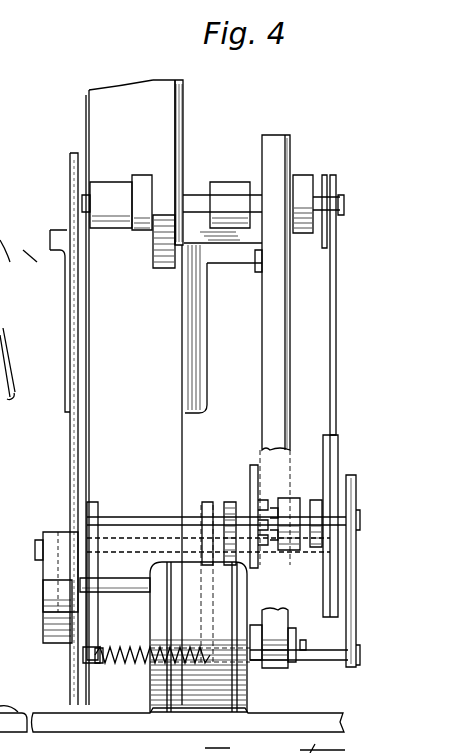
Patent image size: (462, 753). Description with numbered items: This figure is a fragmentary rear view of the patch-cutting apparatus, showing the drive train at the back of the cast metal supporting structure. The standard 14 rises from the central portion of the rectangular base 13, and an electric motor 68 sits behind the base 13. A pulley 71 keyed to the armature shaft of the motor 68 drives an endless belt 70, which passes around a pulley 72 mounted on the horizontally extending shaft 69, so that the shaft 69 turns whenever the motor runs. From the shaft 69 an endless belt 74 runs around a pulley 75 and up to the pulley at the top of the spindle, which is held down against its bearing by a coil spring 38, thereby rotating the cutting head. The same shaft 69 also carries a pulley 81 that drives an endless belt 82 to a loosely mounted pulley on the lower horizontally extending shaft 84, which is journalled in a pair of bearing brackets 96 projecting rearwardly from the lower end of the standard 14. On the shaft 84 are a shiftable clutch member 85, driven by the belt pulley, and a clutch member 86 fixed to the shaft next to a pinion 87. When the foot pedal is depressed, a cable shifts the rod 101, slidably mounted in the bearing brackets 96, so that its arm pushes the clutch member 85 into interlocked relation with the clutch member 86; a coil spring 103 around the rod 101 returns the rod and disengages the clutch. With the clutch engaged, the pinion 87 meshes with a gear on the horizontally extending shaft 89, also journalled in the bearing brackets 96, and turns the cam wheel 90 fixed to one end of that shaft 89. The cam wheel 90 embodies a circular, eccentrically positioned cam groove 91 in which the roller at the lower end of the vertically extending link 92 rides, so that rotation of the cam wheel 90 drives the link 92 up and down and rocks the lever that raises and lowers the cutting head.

The rectangular base 13 is at (140, 724).
The standard 14 is at (174, 392).
The coil spring 38 is at (332, 462).
The electric motor 68 is at (240, 690).
The horizontally extending shaft 69 is at (340, 213).
The endless belt 70 is at (278, 328).
The pulley 71 is at (290, 656).
The pulley 72 is at (296, 172).
The endless belt 74 is at (165, 112).
The pulley 75 is at (147, 246).
The pulley 81 is at (334, 180).
The endless belt 82 is at (330, 298).
The horizontally extending shaft 84 is at (150, 513).
The clutch member 85 is at (294, 500).
The clutch member 86 is at (262, 500).
The pinion 87 is at (229, 502).
The horizontally extending shaft 89 is at (115, 591).
The cam wheel 90 is at (43, 635).
The cam groove 91 is at (58, 558).
The vertically extending link 92 is at (70, 470).
The bearing brackets 96 is at (98, 502).
The rod 101 is at (312, 652).
The coil spring 103 is at (105, 666).